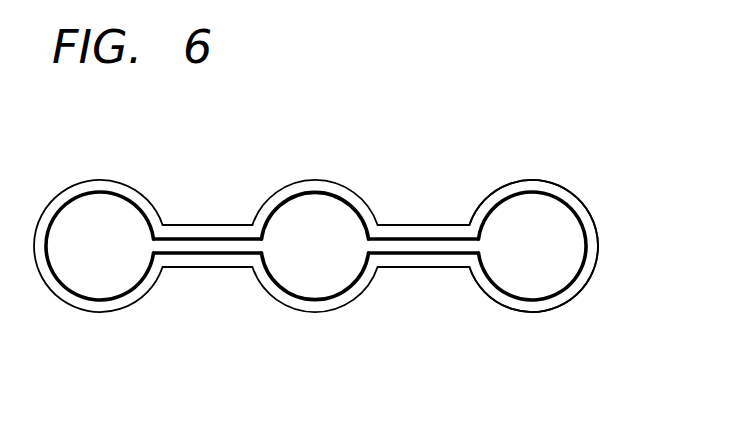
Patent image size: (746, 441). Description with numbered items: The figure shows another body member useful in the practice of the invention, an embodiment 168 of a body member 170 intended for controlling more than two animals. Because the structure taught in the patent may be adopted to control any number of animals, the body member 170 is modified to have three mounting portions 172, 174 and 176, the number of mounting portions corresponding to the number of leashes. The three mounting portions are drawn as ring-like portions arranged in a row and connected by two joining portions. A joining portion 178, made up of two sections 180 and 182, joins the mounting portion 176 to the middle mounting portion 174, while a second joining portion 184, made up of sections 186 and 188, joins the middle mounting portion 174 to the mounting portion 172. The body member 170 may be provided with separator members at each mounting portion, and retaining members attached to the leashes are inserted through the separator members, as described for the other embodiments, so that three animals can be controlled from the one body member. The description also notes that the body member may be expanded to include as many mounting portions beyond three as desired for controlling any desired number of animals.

The embodiment 168 is at (368, 240).
The body member 170 is at (600, 245).
The mounting portion 172 is at (528, 180).
The mounting portion 174 is at (315, 178).
The mounting portion 176 is at (102, 180).
The joining portion 178 is at (185, 225).
The section 180 is at (231, 225).
The section 182 is at (209, 270).
The joining portion 184 is at (390, 223).
The section 186 is at (435, 223).
The section 188 is at (420, 270).